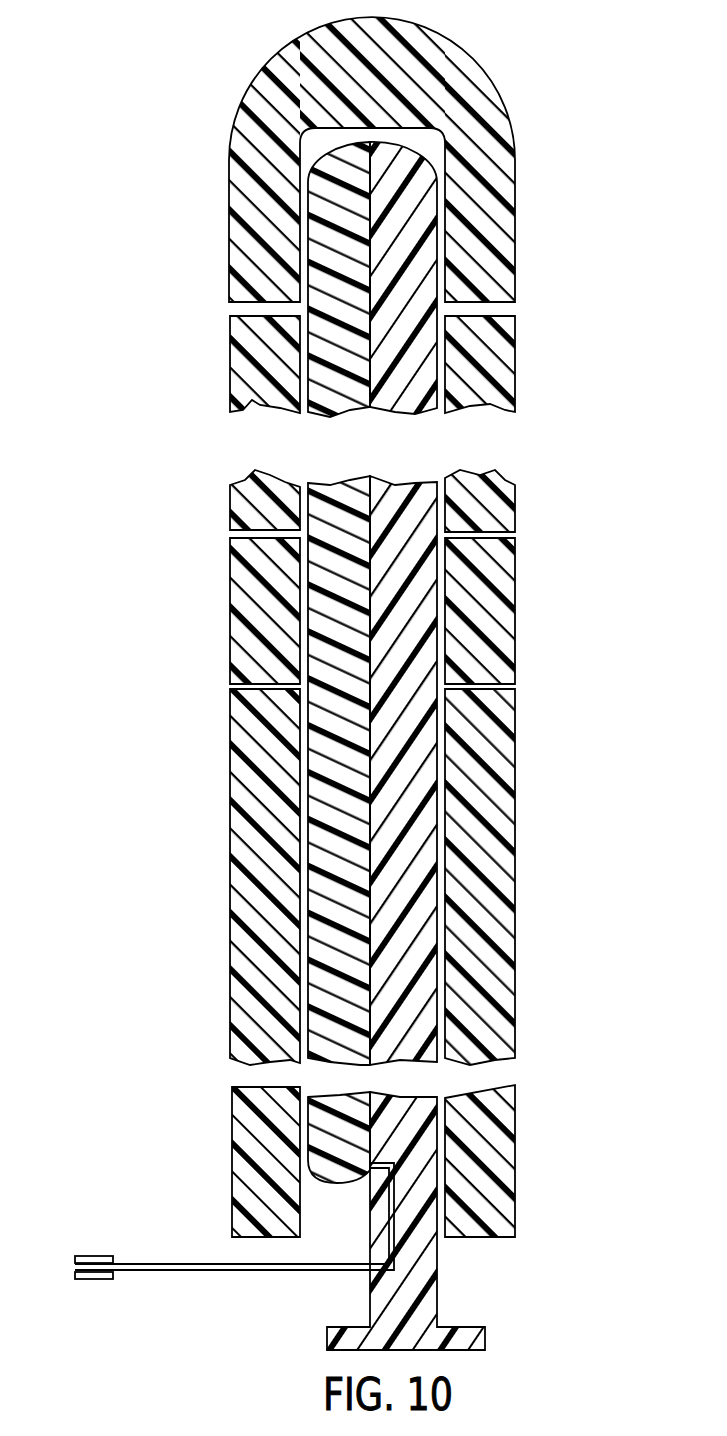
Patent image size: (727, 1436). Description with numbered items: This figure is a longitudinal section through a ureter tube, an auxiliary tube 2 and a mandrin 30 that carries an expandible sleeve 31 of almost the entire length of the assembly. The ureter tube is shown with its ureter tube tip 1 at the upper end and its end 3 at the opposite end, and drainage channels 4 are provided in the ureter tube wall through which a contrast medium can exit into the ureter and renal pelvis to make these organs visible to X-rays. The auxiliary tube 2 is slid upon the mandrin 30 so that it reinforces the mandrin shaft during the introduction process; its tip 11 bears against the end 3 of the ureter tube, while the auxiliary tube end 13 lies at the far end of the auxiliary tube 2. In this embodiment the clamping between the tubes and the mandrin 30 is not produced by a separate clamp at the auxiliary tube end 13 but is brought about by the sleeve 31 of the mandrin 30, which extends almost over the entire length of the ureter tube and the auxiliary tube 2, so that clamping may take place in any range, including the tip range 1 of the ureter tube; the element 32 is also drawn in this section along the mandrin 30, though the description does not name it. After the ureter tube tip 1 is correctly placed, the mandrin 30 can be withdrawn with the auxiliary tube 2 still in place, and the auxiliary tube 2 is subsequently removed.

The ureter tube tip 1 is at (395, 17).
The auxiliary tube 2 is at (248, 364).
The end of the ureter tube 3 is at (253, 642).
The drainage channels 4 is at (507, 310).
The tip of the auxiliary tube 11 is at (475, 720).
The auxiliary tube end 13 is at (518, 1220).
The mandrin 30 is at (92, 1283).
The sleeve 31 is at (407, 203).
The inner core rod 32 is at (340, 568).